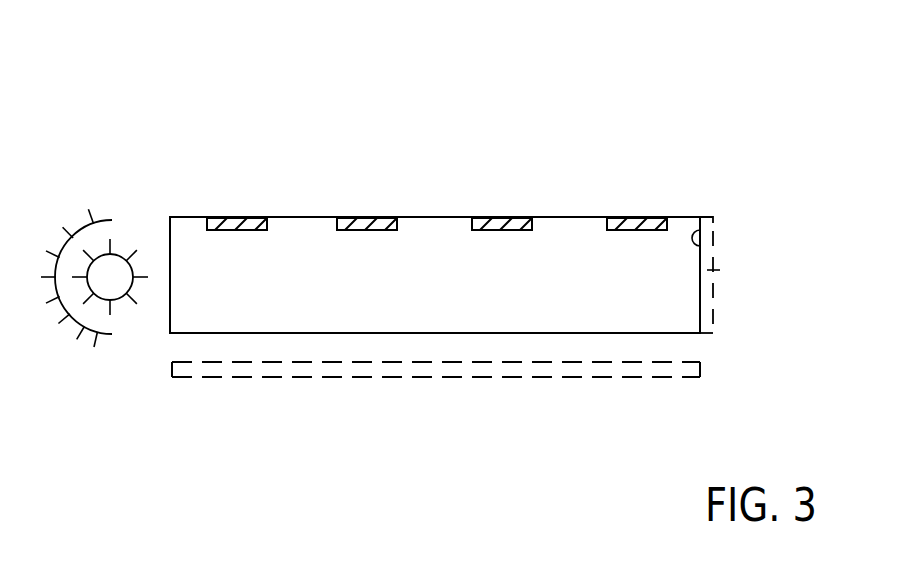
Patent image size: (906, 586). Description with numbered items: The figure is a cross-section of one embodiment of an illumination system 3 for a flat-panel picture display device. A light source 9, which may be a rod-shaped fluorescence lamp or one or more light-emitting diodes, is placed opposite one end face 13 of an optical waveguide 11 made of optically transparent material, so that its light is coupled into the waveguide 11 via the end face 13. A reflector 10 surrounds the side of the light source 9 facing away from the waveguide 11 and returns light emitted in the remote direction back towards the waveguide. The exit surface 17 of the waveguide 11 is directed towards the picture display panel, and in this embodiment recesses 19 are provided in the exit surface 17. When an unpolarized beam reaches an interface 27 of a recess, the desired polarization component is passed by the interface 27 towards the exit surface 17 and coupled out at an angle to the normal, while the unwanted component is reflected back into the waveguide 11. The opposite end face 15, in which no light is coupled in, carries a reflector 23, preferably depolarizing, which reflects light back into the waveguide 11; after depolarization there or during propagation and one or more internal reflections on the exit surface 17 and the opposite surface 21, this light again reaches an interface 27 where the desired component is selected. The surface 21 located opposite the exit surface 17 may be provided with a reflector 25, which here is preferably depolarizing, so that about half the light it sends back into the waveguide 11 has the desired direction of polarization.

The illumination system 3 is at (632, 87).
The light source 9 is at (120, 288).
The reflector 10 is at (90, 334).
The optical waveguide 11 is at (683, 228).
The end face 13 is at (168, 237).
The end face 15 is at (703, 232).
The exit surface 17 is at (182, 217).
The recesses 19 is at (380, 232).
The surface 21 is at (700, 335).
The reflector 23 is at (737, 270).
The reflector 25 is at (276, 368).
The interface 27 is at (237, 232).